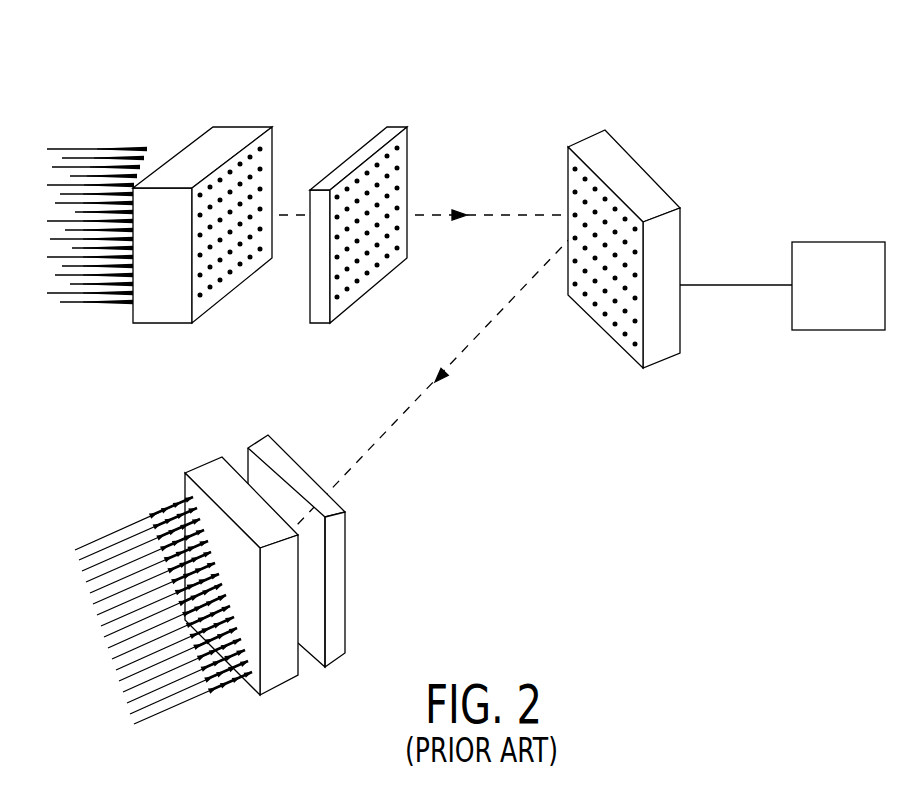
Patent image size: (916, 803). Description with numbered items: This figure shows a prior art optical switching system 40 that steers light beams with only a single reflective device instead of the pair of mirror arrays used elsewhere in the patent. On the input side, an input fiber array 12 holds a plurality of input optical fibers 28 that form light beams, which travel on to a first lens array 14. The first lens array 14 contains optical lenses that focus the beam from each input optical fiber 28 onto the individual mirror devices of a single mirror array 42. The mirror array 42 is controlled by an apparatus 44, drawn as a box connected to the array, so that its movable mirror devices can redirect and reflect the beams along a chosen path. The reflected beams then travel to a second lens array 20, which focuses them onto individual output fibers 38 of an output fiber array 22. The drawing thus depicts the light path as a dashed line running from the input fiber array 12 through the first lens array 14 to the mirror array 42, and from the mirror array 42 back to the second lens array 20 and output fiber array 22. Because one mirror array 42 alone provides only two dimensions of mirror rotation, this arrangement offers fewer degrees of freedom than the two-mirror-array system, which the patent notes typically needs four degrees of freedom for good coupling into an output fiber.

The optical switching system 40 is at (757, 98).
The input optical fibers 28 is at (118, 148).
The input fiber array 12 is at (238, 127).
The first lens array 14 is at (395, 125).
The mirror array 42 is at (680, 233).
The controlling apparatus 44 is at (845, 242).
The second lens array 20 is at (257, 443).
The output fiber array 22 is at (195, 470).
The output fibers 38 is at (125, 525).